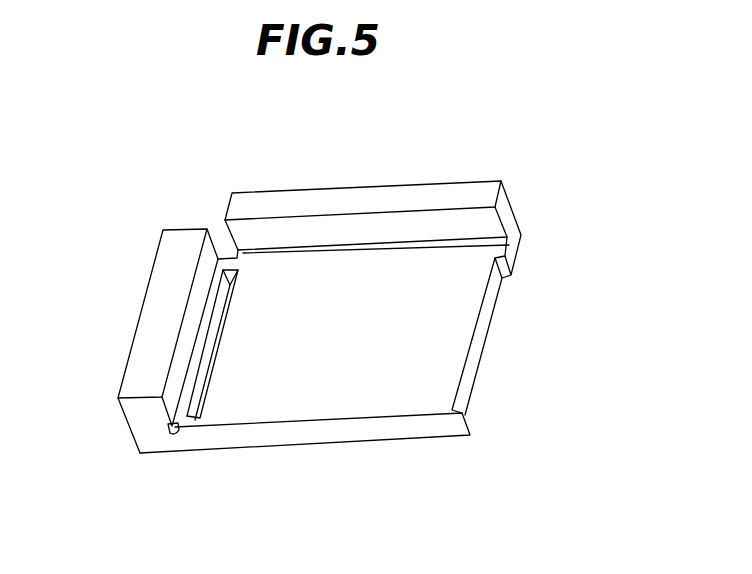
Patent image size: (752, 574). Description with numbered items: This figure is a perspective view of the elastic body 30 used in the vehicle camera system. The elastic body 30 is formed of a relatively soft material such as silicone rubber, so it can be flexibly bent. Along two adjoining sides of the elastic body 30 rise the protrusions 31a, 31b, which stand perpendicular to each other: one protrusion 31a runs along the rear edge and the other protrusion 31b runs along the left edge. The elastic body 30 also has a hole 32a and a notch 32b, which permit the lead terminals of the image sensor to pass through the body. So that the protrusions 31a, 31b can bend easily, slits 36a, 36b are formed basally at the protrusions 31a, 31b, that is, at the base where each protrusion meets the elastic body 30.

The elastic body 30 is at (430, 293).
The protrusion 31a is at (387, 197).
The protrusion 31b is at (160, 332).
The hole 32a is at (203, 363).
The notch 32b is at (473, 338).
The slit 36a is at (522, 237).
The slit 36b is at (175, 434).